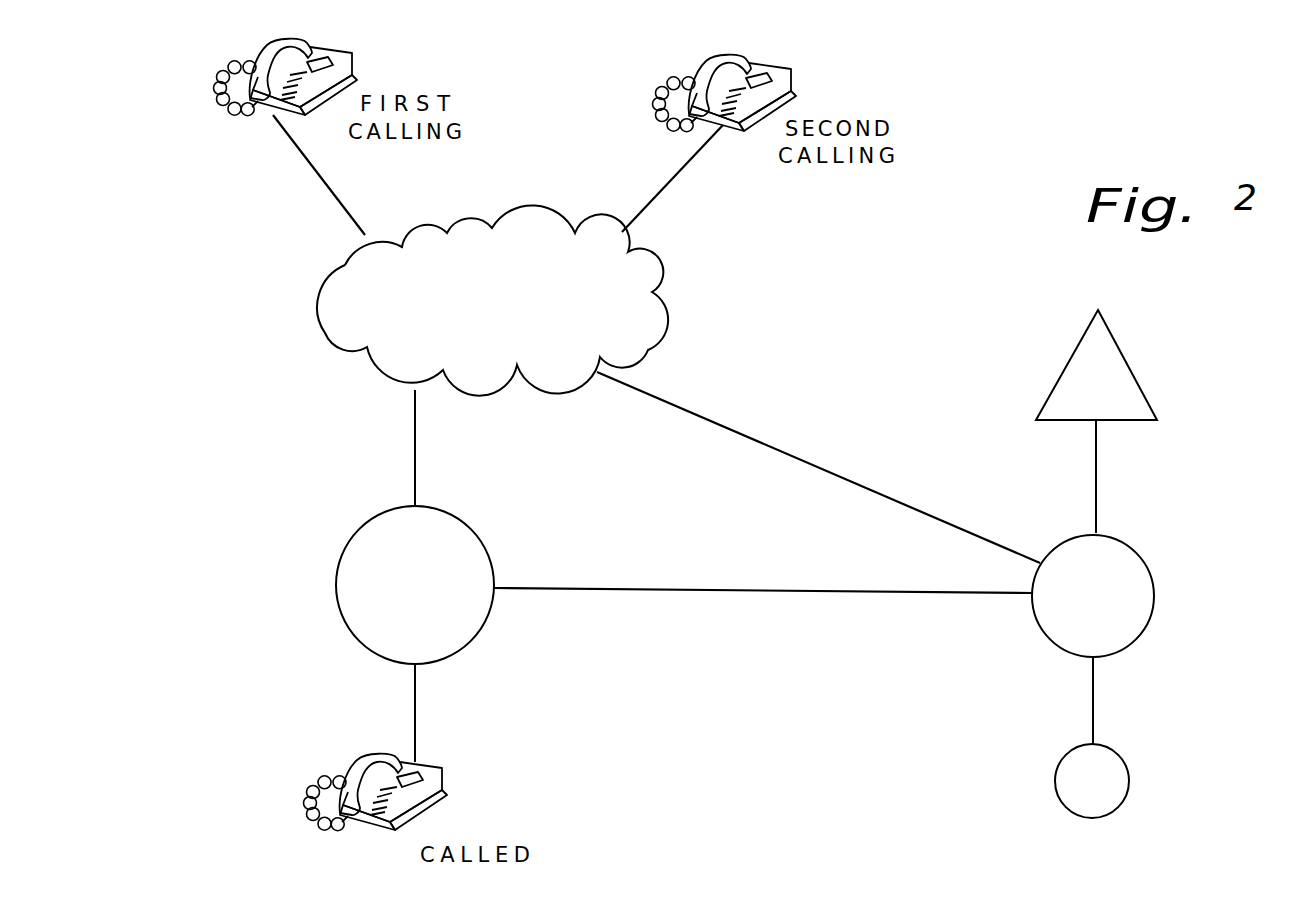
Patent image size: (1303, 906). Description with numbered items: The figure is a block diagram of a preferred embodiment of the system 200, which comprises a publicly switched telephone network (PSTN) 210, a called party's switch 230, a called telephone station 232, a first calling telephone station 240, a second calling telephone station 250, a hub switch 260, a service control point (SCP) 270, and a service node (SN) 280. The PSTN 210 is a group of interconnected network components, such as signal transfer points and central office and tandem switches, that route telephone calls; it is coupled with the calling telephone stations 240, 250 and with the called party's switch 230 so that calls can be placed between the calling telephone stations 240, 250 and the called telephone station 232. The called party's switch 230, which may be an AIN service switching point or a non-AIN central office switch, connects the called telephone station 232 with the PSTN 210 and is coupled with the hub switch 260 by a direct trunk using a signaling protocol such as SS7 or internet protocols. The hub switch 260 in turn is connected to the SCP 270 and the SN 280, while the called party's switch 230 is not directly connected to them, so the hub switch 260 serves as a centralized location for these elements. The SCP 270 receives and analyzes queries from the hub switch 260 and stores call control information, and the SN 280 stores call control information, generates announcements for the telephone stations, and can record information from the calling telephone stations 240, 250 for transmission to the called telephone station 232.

The system 200 is at (226, 405).
The publicly switched telephone network (PSTN) 210 is at (650, 276).
The called party's switch 230 is at (490, 560).
The called telephone station 232 is at (449, 791).
The first calling telephone station 240 is at (360, 63).
The second calling telephone station 250 is at (800, 80).
The hub switch 260 is at (1140, 557).
The service control point (SCP) 270 is at (1063, 366).
The service node (SN) 280 is at (1055, 778).